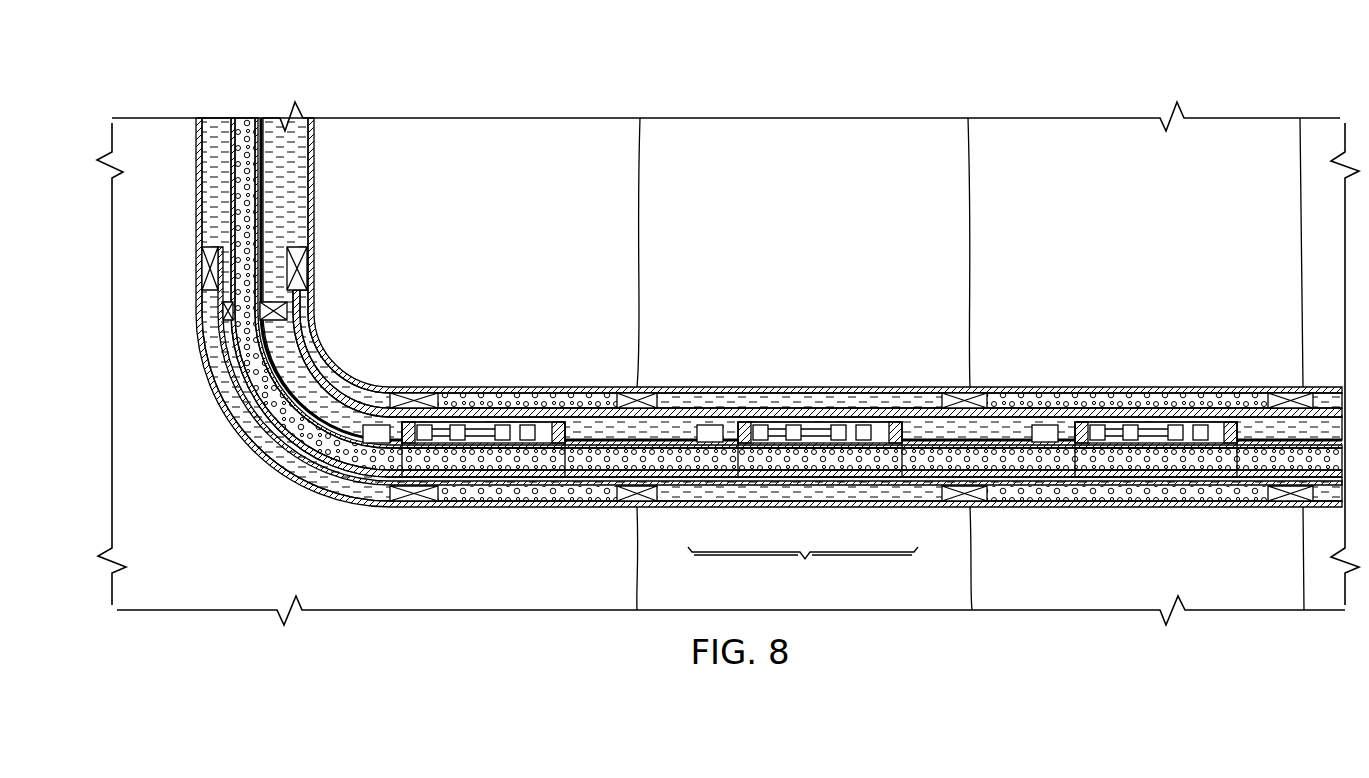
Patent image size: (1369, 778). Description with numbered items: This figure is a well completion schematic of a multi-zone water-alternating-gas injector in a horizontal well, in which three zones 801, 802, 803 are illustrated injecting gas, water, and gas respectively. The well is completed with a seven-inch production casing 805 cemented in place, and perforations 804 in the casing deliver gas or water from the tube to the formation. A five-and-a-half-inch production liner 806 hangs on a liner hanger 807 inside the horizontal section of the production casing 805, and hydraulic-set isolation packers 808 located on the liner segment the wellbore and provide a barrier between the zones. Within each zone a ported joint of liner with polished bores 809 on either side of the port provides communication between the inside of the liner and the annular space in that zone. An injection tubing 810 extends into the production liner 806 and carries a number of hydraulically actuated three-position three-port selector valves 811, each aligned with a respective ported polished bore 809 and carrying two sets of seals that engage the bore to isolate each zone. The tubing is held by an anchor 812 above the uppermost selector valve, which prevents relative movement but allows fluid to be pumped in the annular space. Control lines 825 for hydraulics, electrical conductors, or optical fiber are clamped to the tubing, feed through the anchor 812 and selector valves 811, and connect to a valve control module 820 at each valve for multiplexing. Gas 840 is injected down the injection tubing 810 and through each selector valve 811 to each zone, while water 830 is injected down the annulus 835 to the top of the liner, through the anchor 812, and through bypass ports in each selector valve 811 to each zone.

The first zone 801 is at (423, 120).
The second zone 802 is at (812, 120).
The third zone 803 is at (1218, 125).
The perforations 804 is at (803, 569).
The production casing 805 is at (318, 152).
The production liner 806 is at (320, 360).
The liner hanger 807 is at (300, 252).
The isolation packers 808 is at (675, 388).
The polished bores 809 is at (1115, 428).
The injection tubing 810 is at (230, 213).
The selector valves 811 is at (808, 410).
The anchor 812 is at (284, 313).
The valve control module 820 is at (712, 425).
The control lines 825 is at (344, 432).
The water 830 is at (216, 128).
The annulus 835 is at (306, 192).
The gas 840 is at (245, 127).